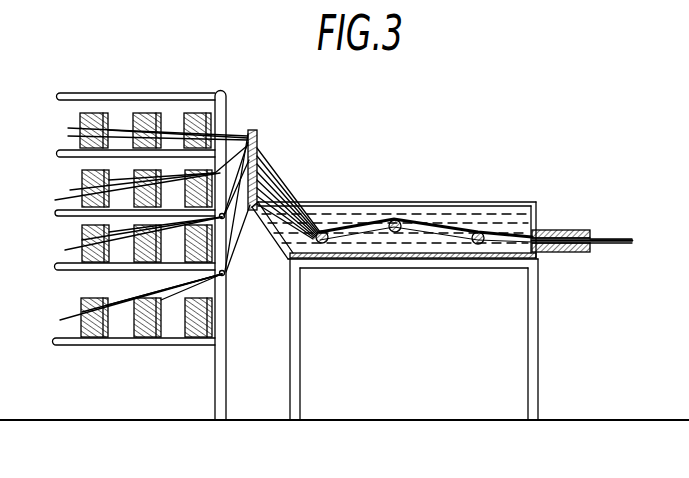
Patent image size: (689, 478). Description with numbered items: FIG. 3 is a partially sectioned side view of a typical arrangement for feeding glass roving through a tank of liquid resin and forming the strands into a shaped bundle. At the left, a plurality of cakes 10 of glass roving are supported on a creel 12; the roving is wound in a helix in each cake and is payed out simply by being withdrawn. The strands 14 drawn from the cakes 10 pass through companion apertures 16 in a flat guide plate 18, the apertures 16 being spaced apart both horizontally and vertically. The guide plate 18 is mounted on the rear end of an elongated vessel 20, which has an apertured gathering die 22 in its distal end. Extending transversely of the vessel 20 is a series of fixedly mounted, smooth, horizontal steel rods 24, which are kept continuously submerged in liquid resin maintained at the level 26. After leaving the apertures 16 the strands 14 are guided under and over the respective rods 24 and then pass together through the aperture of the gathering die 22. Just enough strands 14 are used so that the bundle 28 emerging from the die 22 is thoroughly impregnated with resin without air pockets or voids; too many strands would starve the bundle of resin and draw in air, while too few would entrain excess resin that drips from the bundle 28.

The cakes of glass roving 10 is at (80, 125).
The creel 12 is at (133, 93).
The strands 14 is at (283, 186).
The apertures 16 is at (268, 165).
The guide plate 18 is at (256, 135).
The vessel 20 is at (390, 262).
The gathering die 22 is at (546, 230).
The transverse rods 24 is at (321, 245).
The liquid resin level 26 is at (452, 214).
The bundle of strands 28 is at (607, 236).